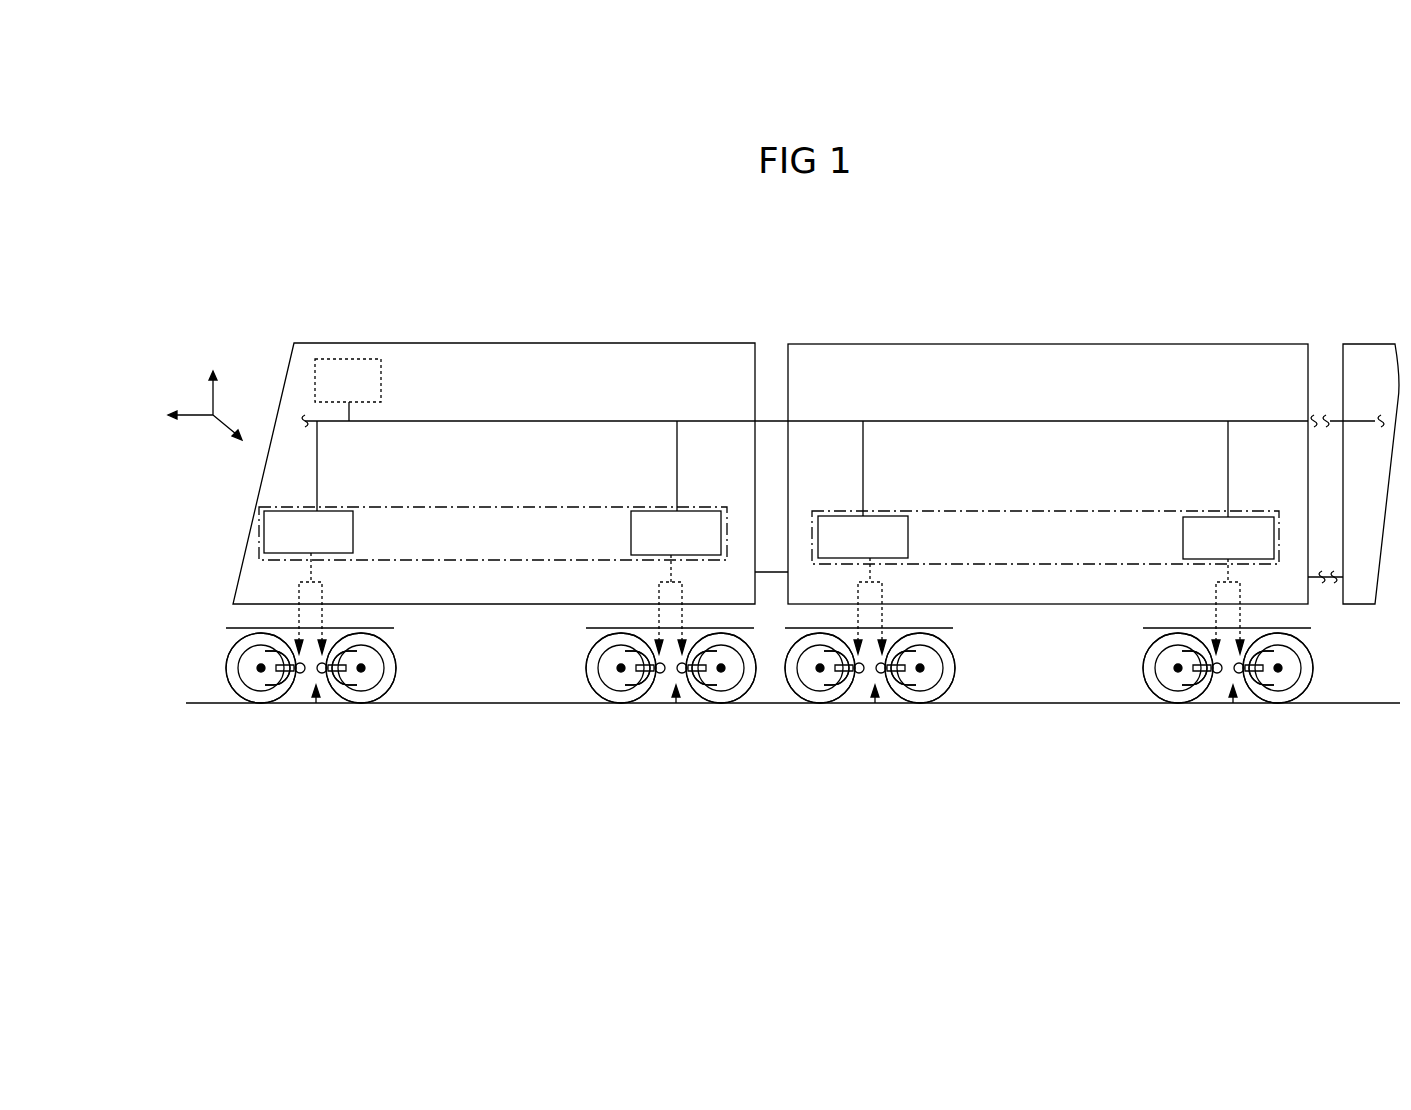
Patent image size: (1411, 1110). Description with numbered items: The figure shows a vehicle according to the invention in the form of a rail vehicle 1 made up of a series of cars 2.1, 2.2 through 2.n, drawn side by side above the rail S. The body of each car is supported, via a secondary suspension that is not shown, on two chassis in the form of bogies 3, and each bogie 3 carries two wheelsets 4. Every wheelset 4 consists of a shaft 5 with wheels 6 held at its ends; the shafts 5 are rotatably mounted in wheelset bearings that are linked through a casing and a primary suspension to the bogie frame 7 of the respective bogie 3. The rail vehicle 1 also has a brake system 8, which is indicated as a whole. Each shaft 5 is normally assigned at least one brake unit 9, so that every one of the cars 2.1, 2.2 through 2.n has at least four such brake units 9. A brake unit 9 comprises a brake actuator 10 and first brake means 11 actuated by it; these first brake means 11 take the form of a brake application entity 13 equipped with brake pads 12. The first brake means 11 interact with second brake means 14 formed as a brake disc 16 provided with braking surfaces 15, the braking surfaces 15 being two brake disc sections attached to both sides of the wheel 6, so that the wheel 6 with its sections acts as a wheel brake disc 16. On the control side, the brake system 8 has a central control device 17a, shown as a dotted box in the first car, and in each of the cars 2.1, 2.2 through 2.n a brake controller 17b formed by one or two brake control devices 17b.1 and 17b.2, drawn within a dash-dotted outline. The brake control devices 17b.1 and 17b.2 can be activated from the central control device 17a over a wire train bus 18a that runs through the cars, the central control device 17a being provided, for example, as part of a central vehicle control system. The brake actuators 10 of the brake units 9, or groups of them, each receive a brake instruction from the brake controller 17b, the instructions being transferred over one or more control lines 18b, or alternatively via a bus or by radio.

The rail vehicle 1 is at (1196, 283).
The car 2.1 is at (502, 342).
The car 2.2 is at (1019, 344).
The car 2.n is at (1368, 344).
The bogie 3 is at (316, 703).
The wheelset 4 is at (773, 663).
The shaft 5 is at (261, 670).
The wheel 6 is at (231, 688).
The bogie frame 7 is at (312, 628).
The brake system 8 is at (965, 470).
The brake unit 9 is at (293, 648).
The brake actuator 10 is at (300, 674).
The first brake means 11 is at (774, 671).
The brake pad 12 is at (266, 654).
The brake application entity 13 is at (277, 686).
The second brake means 14 is at (774, 712).
The braking surface 15 is at (242, 665).
The brake disc 16 is at (226, 672).
The central control device 17a is at (381, 380).
The brake controller 17b is at (489, 507).
The brake control device 17b.1 is at (340, 511).
The brake control device 17b.2 is at (641, 511).
The wire train bus 18a is at (541, 420).
The control line 18b is at (312, 569).
The rail / track S is at (1070, 703).